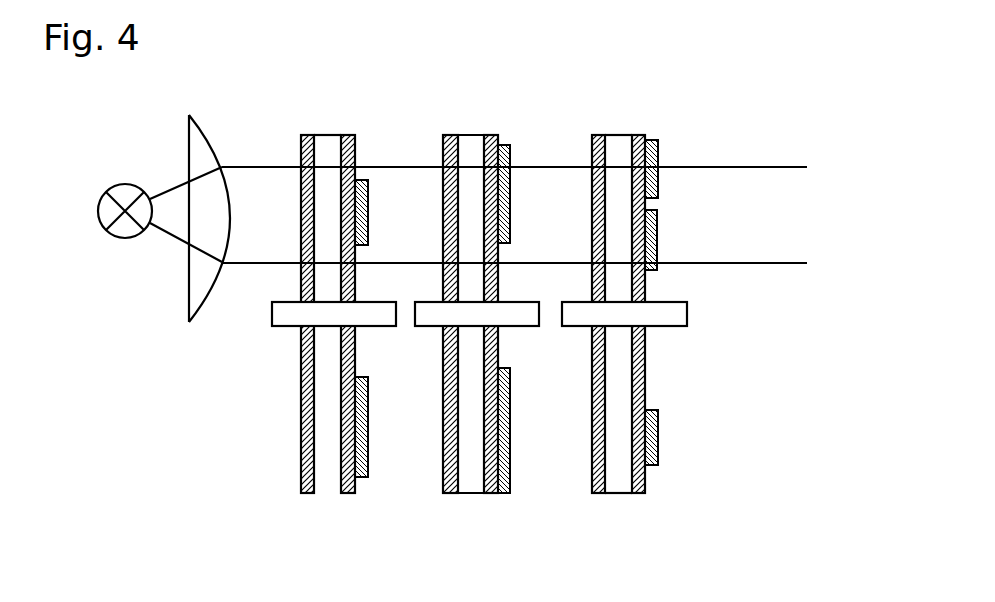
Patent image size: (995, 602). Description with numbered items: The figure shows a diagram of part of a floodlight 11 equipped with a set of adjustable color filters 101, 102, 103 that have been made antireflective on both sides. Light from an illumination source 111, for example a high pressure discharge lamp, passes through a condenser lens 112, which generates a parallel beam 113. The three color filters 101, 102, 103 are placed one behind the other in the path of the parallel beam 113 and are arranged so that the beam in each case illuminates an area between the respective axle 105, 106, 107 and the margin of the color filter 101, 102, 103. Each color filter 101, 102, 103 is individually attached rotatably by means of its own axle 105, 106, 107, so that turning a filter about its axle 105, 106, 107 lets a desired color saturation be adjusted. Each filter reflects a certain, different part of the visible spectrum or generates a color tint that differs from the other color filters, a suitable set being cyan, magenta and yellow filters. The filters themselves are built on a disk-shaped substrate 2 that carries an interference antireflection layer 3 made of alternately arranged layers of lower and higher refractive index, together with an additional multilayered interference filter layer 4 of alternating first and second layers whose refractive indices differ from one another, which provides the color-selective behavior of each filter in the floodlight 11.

The substrate 2 is at (620, 482).
The interference antireflection layer 3 is at (348, 497).
The interference filter layer 4 is at (368, 197).
The floodlight 11 is at (283, 80).
The color filter 101 is at (345, 118).
The color filter 102 is at (473, 120).
The color filter 103 is at (621, 120).
The axle 105 is at (271, 312).
The axle 106 is at (437, 325).
The axle 107 is at (573, 328).
The illumination source 111 is at (122, 238).
The condenser lens 112 is at (197, 313).
The parallel beam 113 is at (739, 166).